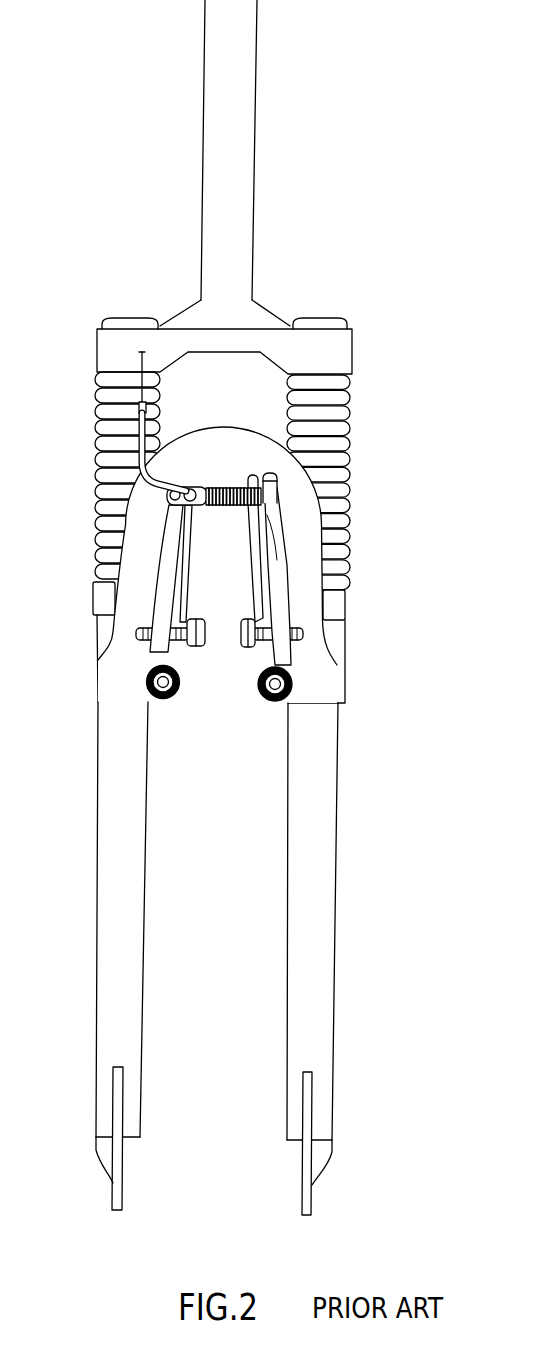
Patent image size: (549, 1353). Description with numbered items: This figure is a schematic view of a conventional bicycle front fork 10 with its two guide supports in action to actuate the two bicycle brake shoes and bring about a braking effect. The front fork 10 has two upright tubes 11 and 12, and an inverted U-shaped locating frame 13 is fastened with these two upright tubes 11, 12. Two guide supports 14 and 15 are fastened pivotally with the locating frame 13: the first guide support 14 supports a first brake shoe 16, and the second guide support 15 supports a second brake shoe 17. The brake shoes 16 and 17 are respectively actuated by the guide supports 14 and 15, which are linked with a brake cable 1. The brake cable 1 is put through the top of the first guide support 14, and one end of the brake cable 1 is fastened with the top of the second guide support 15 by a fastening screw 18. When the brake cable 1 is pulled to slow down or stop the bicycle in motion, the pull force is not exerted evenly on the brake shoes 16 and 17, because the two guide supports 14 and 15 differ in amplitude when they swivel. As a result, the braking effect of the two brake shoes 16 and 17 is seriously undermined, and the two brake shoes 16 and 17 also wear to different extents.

The bicycle front fork 10 is at (404, 254).
The brake cable 1 is at (138, 365).
The upright tube 11 is at (100, 932).
The upright tube 12 is at (330, 895).
The locating frame 13 is at (218, 452).
The first guide support 14 is at (157, 528).
The second guide support 15 is at (283, 543).
The first brake shoe 16 is at (195, 648).
The second brake shoe 17 is at (242, 650).
The fastening screw 18 is at (272, 473).